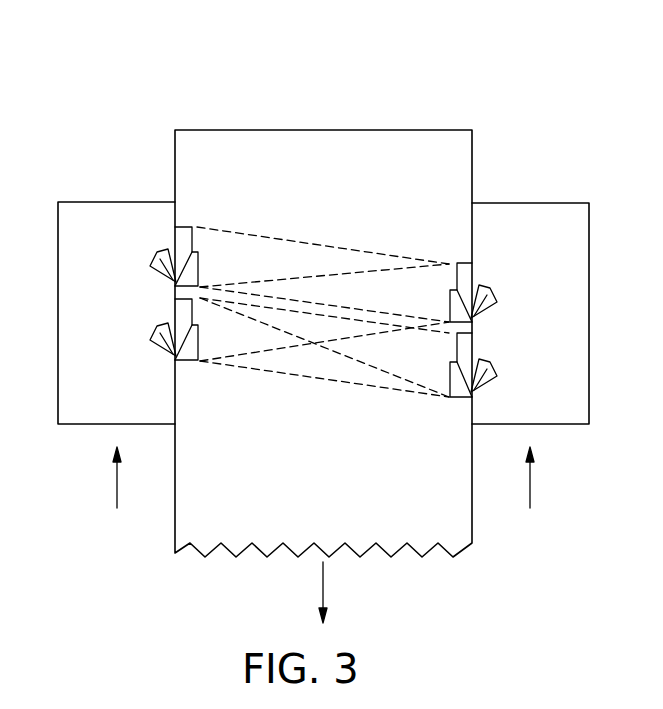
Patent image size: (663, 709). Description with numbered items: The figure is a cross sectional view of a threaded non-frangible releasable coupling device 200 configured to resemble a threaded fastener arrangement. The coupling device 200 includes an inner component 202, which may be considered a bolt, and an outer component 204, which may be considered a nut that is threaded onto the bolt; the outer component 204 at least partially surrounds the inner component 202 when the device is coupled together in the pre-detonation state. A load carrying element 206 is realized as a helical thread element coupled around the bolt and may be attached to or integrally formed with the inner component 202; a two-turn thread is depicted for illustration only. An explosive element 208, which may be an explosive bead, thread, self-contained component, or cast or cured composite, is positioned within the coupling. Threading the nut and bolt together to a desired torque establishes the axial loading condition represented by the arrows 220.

The threaded non-frangible releasable coupling device 200 is at (138, 56).
The inner component 202 is at (385, 130).
The outer component 204 is at (98, 202).
The load carrying element 206 is at (186, 240).
The explosive element 208 is at (152, 263).
The arrows 220 is at (117, 481).